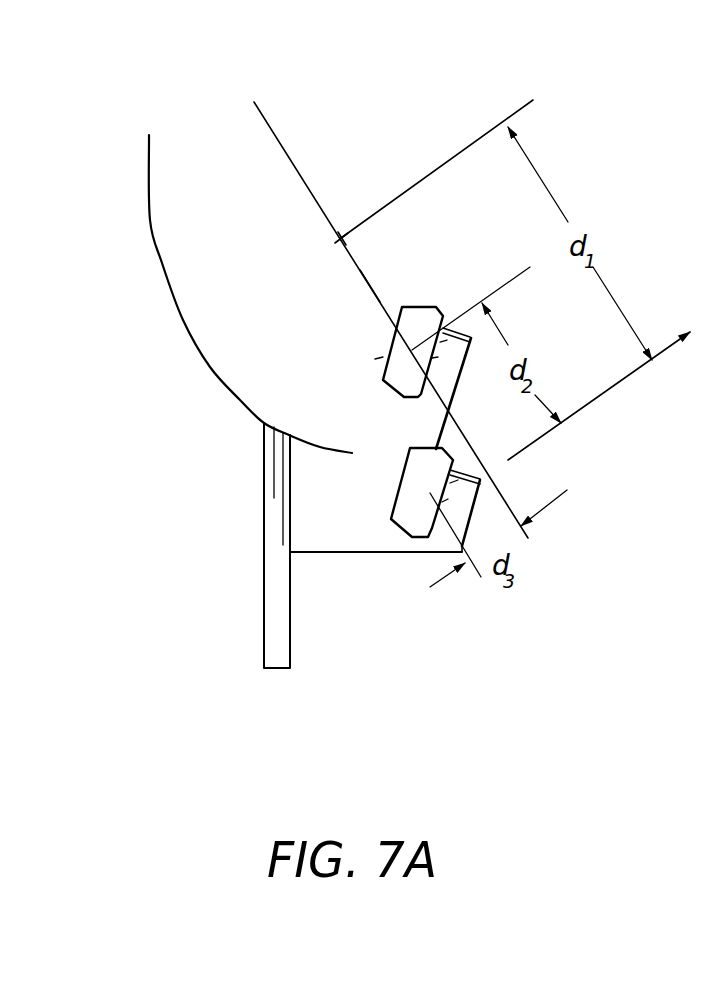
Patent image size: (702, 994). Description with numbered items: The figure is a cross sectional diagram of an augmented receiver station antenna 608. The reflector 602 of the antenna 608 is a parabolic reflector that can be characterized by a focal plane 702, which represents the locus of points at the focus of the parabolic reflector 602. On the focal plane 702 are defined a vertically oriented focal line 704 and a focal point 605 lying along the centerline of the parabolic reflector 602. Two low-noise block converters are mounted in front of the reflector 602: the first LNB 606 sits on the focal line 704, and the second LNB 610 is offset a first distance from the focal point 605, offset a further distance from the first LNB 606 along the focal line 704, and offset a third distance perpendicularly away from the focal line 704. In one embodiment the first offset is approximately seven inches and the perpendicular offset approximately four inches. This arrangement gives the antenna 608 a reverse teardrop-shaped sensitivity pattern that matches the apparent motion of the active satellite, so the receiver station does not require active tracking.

The reflector 602 is at (165, 264).
The focal point 605 is at (340, 239).
The first LNB 606 is at (381, 366).
The augmented receiver station antenna 608 is at (429, 89).
The second LNB 610 is at (396, 495).
The focal plane 702 is at (282, 141).
The focal line 704 is at (369, 285).